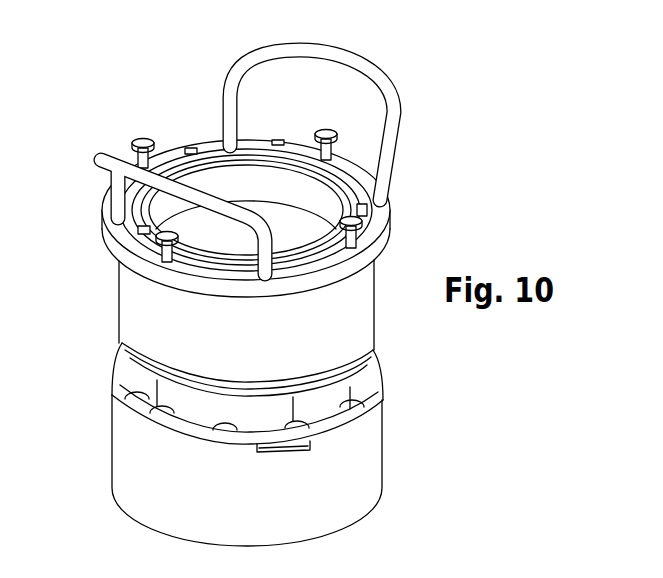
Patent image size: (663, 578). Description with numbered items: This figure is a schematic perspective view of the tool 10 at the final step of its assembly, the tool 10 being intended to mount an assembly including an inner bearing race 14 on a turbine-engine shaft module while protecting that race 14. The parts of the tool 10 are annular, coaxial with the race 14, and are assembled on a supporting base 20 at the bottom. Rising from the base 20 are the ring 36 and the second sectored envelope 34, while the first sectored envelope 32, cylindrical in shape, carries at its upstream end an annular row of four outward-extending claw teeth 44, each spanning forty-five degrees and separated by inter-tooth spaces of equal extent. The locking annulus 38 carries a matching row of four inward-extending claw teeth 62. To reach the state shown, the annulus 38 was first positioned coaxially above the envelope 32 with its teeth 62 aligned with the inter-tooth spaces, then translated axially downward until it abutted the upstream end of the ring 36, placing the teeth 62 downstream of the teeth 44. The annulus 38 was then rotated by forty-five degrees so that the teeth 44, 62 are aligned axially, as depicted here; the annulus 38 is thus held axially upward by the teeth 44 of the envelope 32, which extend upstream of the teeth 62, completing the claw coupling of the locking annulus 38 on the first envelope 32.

The tool 10 is at (399, 185).
The inner bearing race 14 is at (272, 178).
The supporting base 20 is at (357, 463).
The first sectored envelope 32 is at (198, 153).
The second sectored envelope 34 is at (345, 378).
The ring 36 is at (365, 303).
The locking annulus 38 is at (378, 221).
The claw teeth 44 is at (252, 146).
The claw teeth 62 is at (160, 222).